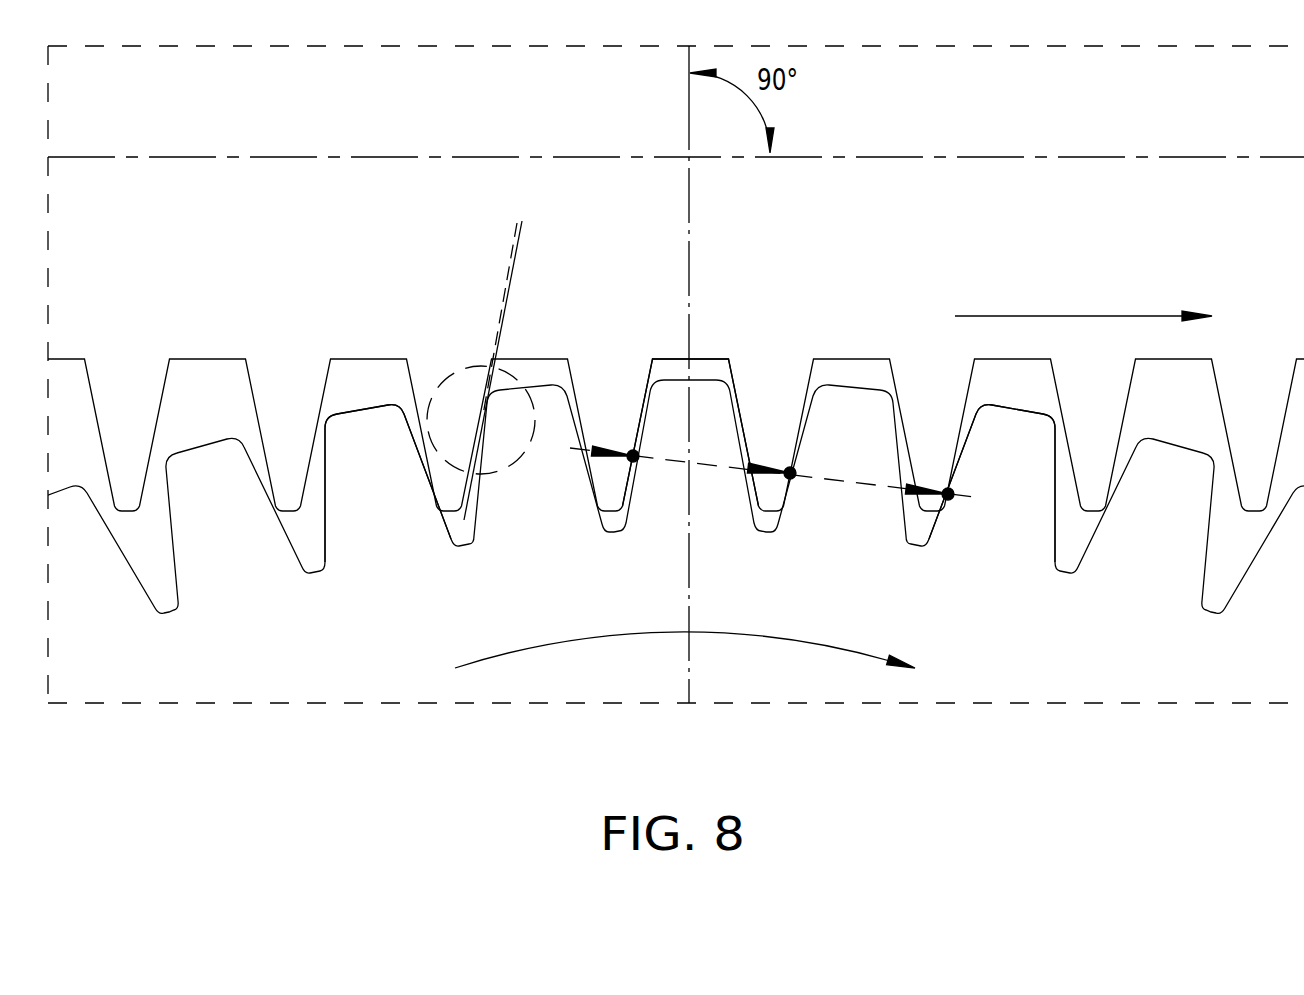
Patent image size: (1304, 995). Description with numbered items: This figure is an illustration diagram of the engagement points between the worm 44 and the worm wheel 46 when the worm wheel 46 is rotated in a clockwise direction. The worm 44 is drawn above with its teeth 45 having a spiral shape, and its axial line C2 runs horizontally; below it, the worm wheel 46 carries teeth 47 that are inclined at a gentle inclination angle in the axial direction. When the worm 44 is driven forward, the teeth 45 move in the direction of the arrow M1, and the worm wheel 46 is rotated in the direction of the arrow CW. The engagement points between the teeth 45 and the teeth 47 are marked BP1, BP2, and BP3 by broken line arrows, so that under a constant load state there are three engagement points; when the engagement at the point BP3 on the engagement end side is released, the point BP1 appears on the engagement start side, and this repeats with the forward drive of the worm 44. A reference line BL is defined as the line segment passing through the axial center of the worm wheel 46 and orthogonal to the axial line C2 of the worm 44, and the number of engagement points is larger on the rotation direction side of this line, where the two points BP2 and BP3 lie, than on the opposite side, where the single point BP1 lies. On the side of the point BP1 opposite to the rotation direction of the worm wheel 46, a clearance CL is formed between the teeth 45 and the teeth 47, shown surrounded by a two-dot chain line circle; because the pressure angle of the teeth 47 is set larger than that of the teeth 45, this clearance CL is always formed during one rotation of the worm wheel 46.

The worm 44 is at (198, 236).
The teeth 45 is at (788, 420).
The worm wheel 46 is at (382, 675).
The teeth 47 is at (386, 509).
The engagement point BP1 is at (633, 456).
The engagement point BP2 is at (790, 473).
The engagement point BP3 is at (948, 494).
The clearance CL is at (593, 253).
The reference line BL is at (689, 262).
The axial line C2 is at (995, 157).
The arrow M1 is at (1083, 294).
The arrow CW is at (690, 641).